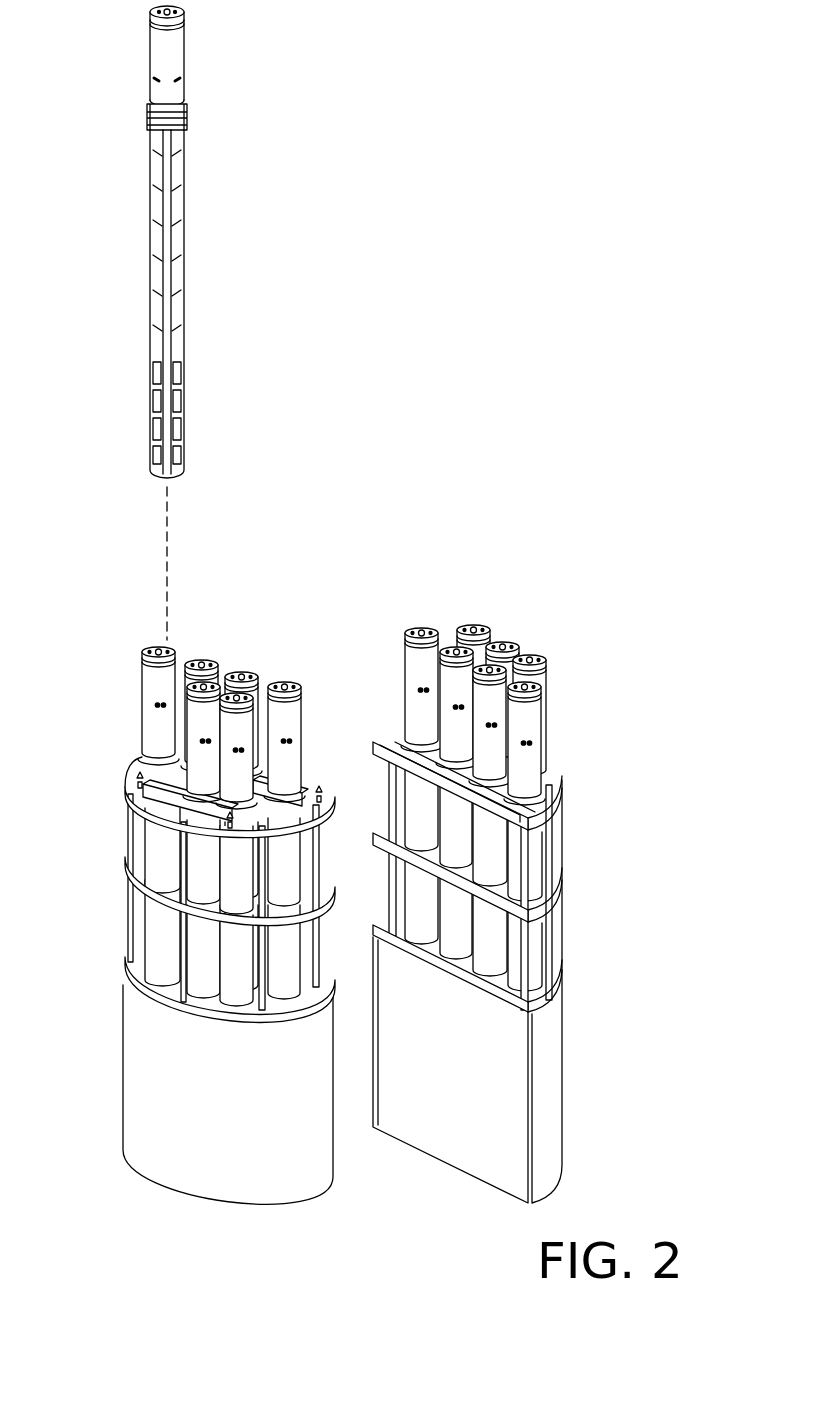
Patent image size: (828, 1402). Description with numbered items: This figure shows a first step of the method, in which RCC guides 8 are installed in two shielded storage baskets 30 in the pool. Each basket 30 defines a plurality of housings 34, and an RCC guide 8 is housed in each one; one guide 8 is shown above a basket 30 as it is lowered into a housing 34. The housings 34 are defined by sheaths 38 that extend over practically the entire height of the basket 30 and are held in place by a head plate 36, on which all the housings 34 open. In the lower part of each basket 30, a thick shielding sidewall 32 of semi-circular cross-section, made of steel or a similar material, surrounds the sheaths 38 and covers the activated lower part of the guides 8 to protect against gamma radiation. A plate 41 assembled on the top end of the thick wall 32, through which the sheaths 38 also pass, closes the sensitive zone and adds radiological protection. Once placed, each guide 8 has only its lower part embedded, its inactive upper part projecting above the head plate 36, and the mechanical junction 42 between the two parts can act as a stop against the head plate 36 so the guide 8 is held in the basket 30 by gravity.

The RCC guide 8 is at (176, 62).
The storage basket 30 is at (350, 979).
The sidewall 32 is at (290, 1157).
The housing 34 is at (140, 778).
The head plate 36 is at (333, 800).
The sheath 38 is at (230, 960).
The plate 41 is at (305, 993).
The mechanical junction 42 is at (322, 792).